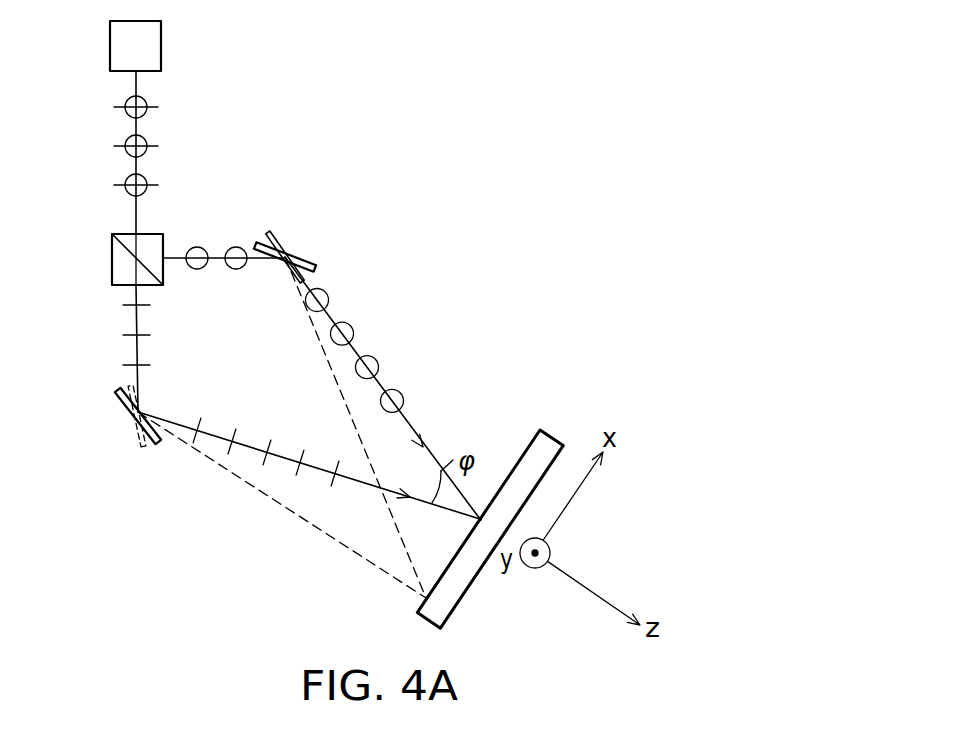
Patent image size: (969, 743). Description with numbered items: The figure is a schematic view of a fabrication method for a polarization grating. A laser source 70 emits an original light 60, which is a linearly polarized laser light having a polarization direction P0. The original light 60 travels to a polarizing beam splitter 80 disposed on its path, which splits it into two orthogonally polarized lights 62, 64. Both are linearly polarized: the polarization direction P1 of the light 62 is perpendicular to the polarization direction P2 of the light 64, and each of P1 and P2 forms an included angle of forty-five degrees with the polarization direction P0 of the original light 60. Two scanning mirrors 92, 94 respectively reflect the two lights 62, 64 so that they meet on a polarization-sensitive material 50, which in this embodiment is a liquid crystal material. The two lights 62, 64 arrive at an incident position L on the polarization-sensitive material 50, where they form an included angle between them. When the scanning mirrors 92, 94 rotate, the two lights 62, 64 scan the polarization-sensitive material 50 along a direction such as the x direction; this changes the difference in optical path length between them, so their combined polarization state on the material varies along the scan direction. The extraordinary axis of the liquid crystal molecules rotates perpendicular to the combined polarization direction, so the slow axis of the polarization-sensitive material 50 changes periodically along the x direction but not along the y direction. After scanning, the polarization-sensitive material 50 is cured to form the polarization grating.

The laser source 70 is at (108, 43).
The polarization direction of original light P0 is at (125, 107).
The original light 60 is at (135, 164).
The polarizing beam splitter 80 is at (150, 233).
The light 62 is at (218, 253).
The scanning mirror 92 is at (296, 253).
The light 64 is at (135, 352).
The scanning mirror 94 is at (125, 413).
The polarization direction of light 62 P1 is at (352, 327).
The polarization direction of light 64 P2 is at (268, 445).
The incident position L is at (481, 517).
The polarization-sensitive material 50 is at (550, 435).